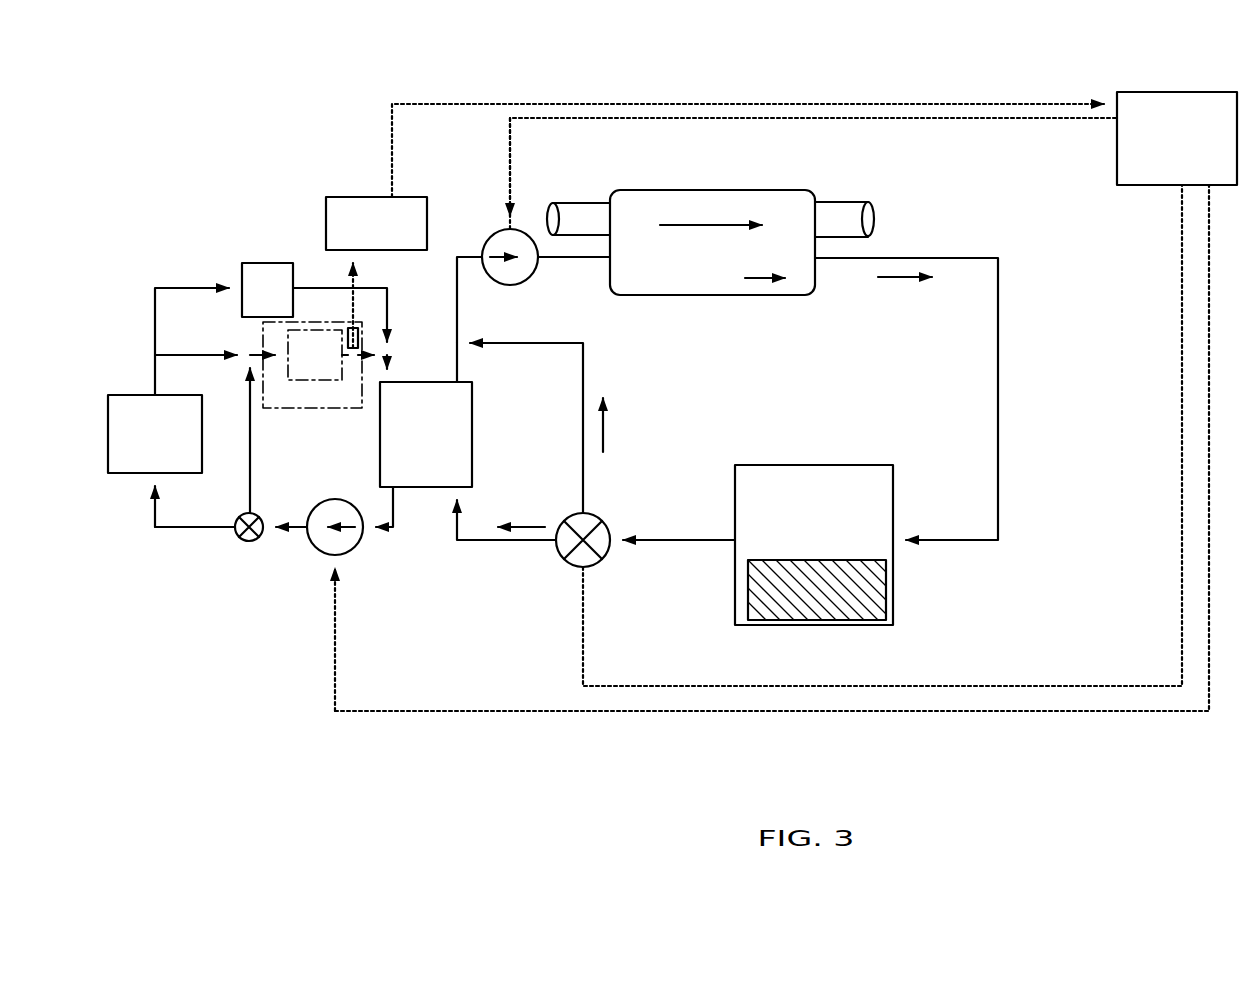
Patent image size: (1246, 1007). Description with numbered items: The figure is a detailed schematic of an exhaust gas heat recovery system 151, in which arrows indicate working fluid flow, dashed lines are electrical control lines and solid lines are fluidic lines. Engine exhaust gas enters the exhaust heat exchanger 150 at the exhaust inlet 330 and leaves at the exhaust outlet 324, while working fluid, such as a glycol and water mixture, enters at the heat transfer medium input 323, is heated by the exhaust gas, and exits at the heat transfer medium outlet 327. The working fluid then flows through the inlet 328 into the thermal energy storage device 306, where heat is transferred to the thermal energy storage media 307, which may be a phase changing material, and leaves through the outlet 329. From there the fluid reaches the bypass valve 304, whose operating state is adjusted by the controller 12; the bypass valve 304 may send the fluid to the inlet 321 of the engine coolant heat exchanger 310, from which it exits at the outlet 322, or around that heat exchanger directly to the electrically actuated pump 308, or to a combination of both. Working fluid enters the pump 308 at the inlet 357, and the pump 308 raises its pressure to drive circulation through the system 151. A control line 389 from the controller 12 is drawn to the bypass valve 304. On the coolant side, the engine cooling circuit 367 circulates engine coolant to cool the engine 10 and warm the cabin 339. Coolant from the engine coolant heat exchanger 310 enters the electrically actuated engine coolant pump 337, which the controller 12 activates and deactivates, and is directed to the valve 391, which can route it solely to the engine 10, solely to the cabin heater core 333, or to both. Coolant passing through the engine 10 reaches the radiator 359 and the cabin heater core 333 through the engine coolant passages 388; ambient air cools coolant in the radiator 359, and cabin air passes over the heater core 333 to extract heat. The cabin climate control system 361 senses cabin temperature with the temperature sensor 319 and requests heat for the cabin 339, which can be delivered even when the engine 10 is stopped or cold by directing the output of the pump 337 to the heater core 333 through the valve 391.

The engine 10 is at (155, 434).
The controller 12 is at (786, 401).
The exhaust heat exchanger 150 is at (735, 190).
The exhaust gas heat recovery system 151 is at (332, 97).
The bypass valve 304 is at (600, 562).
The thermal energy storage device 306 is at (814, 545).
The thermal energy storage media 307 is at (817, 590).
The electrically actuated pump 308 is at (490, 281).
The engine coolant heat exchanger 310 is at (426, 434).
The temperature sensor 319 is at (349, 327).
The inlet 321 is at (460, 493).
The outlet 322 is at (460, 374).
The heat transfer medium input 323 is at (605, 261).
The exhaust outlet 324 is at (825, 215).
The heat transfer medium outlet 327 is at (820, 262).
The inlet 328 is at (900, 540).
The outlet 329 is at (720, 540).
The exhaust inlet 330 is at (595, 217).
The cabin heater core 333 is at (299, 355).
The electrically actuated engine coolant pump 337 is at (316, 550).
The cabin 339 is at (350, 412).
The inlet 357 is at (487, 250).
The radiator 359 is at (267, 290).
The cabin climate control system 361 is at (376, 272).
The engine cooling circuit 367 is at (248, 216).
The engine coolant passages 388 is at (155, 322).
The control line 389 is at (560, 556).
The valve 391 is at (240, 515).